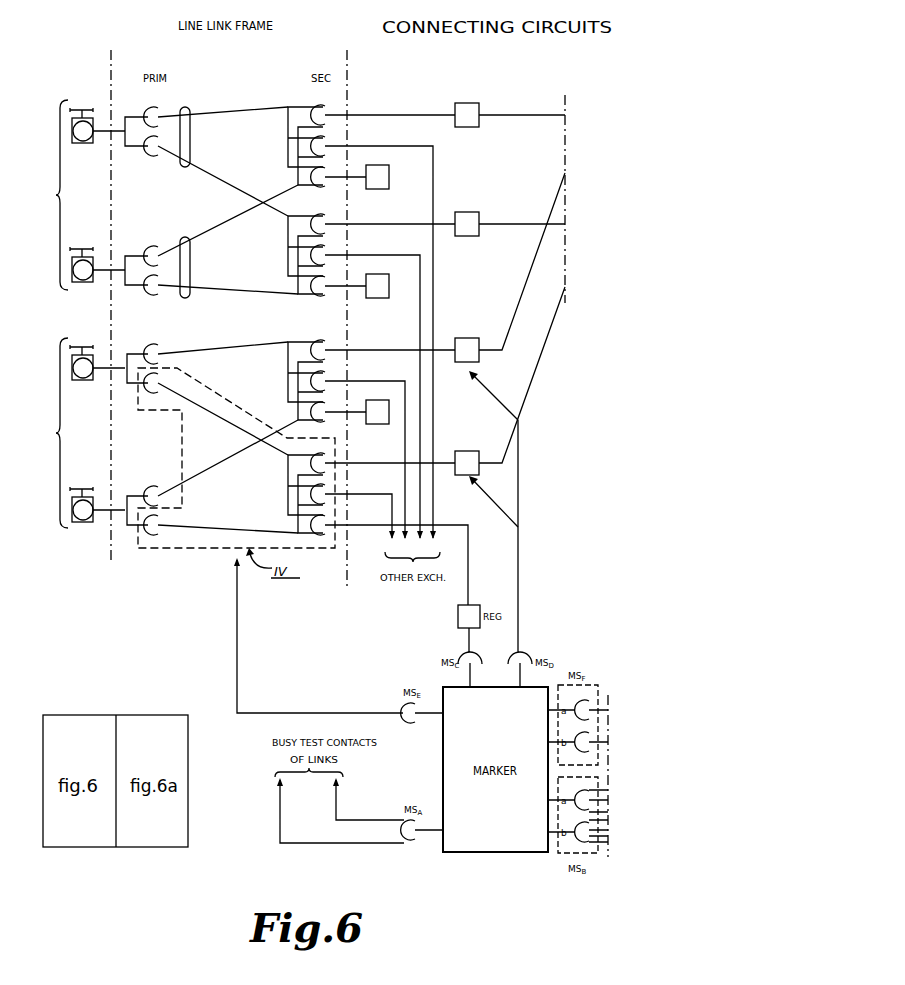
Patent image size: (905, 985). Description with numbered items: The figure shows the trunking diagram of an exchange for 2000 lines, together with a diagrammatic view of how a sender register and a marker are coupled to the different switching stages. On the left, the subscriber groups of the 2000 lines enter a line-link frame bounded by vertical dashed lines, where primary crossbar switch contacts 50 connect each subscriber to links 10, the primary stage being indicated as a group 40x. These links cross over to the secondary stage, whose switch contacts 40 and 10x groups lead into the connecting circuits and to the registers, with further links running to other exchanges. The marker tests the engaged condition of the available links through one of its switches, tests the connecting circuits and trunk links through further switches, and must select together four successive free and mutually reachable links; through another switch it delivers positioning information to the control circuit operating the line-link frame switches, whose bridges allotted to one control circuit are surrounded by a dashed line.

The lines 2000 is at (77, 314).
The primary link contacts 50 is at (144, 314).
The links 10 is at (255, 266).
The secondary switch contacts 40 is at (426, 315).
The primary switch group 40x is at (228, 320).
The secondary switch group 10x is at (426, 368).